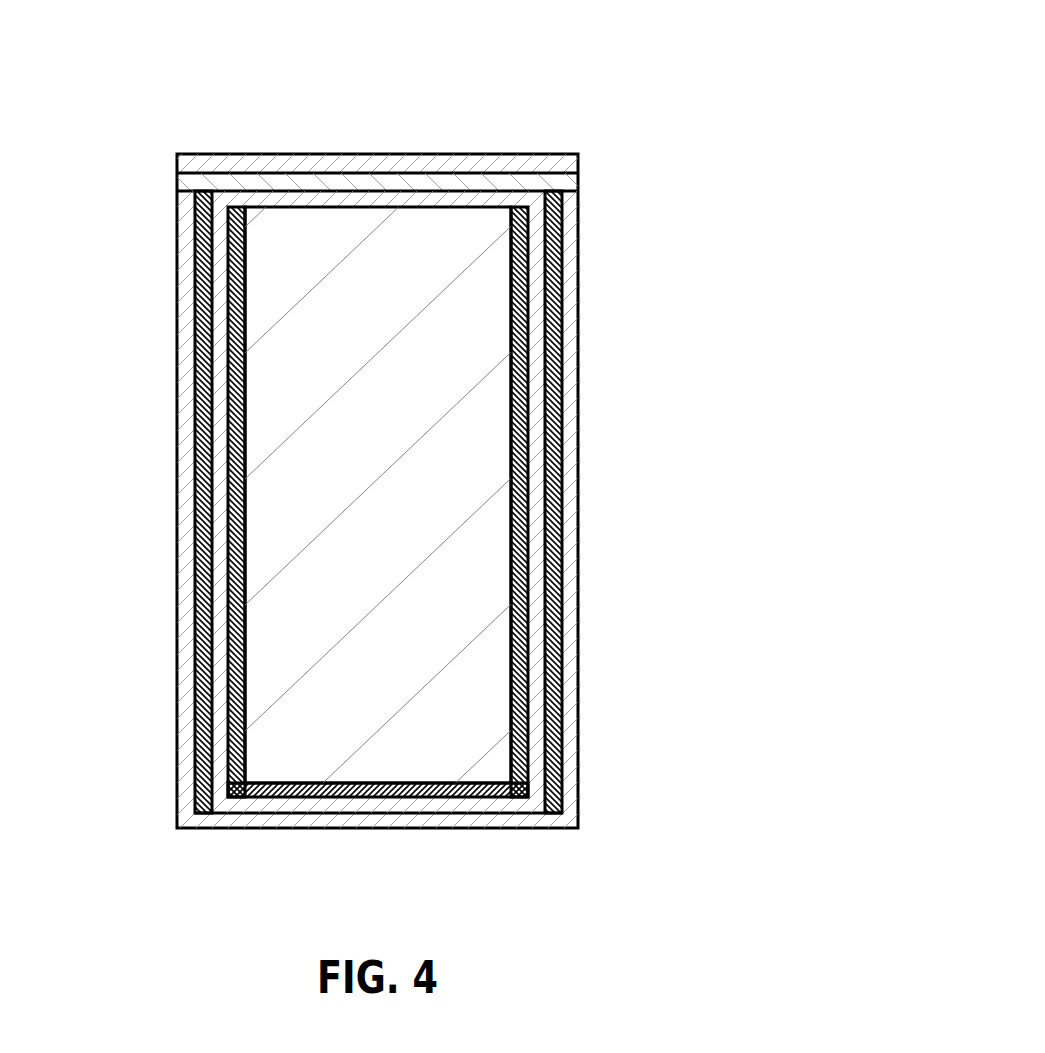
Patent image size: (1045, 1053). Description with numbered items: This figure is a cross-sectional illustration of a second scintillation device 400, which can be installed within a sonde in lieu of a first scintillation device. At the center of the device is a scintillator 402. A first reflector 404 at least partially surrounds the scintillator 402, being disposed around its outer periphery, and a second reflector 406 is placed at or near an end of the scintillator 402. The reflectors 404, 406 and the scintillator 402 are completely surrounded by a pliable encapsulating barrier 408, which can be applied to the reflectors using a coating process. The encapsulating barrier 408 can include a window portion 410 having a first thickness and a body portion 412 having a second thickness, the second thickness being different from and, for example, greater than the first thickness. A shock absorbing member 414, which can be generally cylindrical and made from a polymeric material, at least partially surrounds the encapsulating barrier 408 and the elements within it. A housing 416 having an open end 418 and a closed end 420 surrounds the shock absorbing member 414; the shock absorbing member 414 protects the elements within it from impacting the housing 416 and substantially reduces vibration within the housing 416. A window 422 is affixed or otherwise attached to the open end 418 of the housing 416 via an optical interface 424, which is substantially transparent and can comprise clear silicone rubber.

The second scintillation device 400 is at (391, 464).
The scintillator 402 is at (479, 515).
The first reflector 404 is at (601, 502).
The second reflector 406 is at (456, 559).
The pliable encapsulating barrier 408 is at (298, 524).
The window portion 410 is at (461, 246).
The body portion 412 is at (148, 502).
The shock absorbing member 414 is at (627, 502).
The housing 416 is at (116, 502).
The open end 418 is at (653, 492).
The closed end 420 is at (373, 861).
The window 422 is at (316, 129).
The optical interface 424 is at (316, 237).